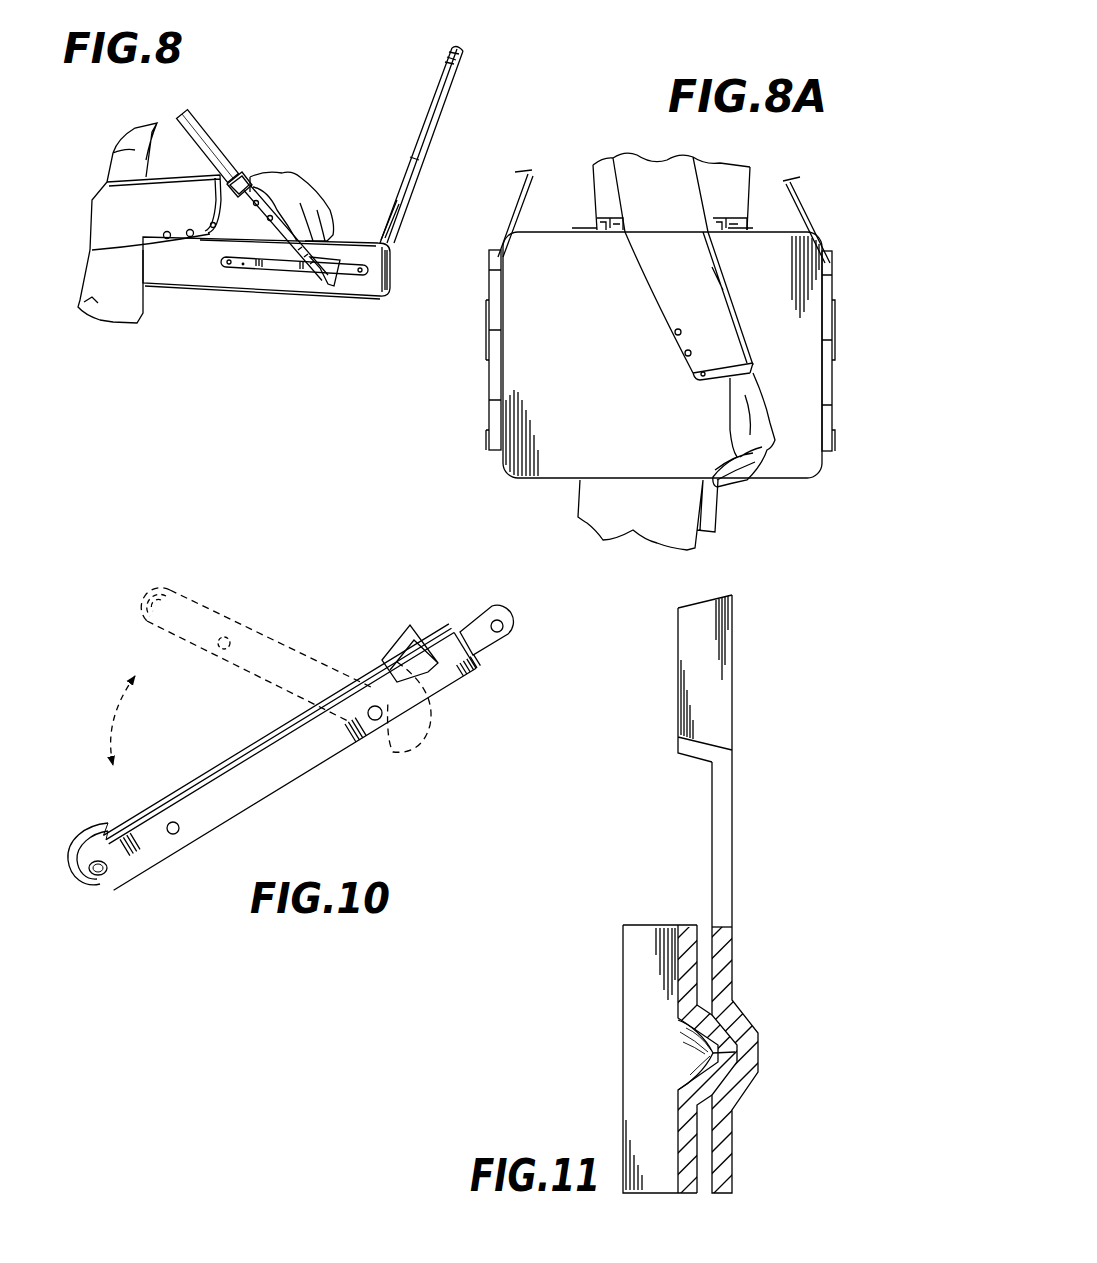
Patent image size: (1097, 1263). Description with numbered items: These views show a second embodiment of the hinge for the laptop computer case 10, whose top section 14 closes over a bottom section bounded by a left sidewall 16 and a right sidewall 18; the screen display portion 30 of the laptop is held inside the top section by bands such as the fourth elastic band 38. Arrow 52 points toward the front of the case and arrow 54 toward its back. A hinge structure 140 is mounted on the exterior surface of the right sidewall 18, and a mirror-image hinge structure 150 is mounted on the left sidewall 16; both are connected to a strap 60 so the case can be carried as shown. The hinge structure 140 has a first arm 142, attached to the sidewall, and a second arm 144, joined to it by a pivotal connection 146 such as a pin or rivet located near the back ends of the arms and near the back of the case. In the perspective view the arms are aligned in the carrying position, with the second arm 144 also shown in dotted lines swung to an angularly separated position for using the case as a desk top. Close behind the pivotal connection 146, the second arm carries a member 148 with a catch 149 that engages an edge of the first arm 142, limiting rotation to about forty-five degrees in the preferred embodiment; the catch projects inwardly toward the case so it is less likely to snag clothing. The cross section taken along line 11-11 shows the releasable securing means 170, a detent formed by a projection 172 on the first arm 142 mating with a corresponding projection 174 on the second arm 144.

In FIG. 8, the laptop computer case 10 is at (394, 254).
In FIG. 8A, the laptop computer case 10 is at (777, 484).
In FIG. 8, the top section 14 is at (441, 117).
In FIG. 8A, the top section 14 is at (515, 213).
In FIG. 8A, the left sidewall 16 is at (820, 460).
In FIG. 8, the right sidewall 18 is at (193, 285).
In FIG. 8, the display portion 30 is at (410, 157).
In FIG. 8, the fourth elastic band 38 is at (438, 64).
In FIG. 8, the arrow 52 is at (187, 358).
In FIG. 8, the arrow 54 is at (385, 360).
In FIG. 8, the strap 60 is at (205, 119).
In FIG. 8A, the strap 60 is at (803, 197).
In FIG. 8, the hinge structure 140 is at (290, 276).
In FIG. 8A, the hinge structure 140 is at (489, 355).
In FIG. 10, the hinge structure 140 is at (294, 778).
In FIG. 10, the first arm 142 is at (110, 822).
In FIG. 10, the second arm 144 is at (302, 620).
In FIG. 10, the pivotal connection 146 is at (383, 715).
In FIG. 10, the member 148 is at (430, 627).
In FIG. 11, the member 148 is at (734, 827).
In FIG. 10, the catch 149 is at (398, 628).
In FIG. 11, the catch 149 is at (692, 753).
In FIG. 8A, the hinge structure 150 is at (830, 356).
In FIG. 10, the releasable securing means 170 is at (180, 828).
In FIG. 11, the releasable securing means 170 is at (749, 1012).
In FIG. 11, the projection 172 is at (716, 1090).
In FIG. 11, the projection 174 is at (760, 1077).
In FIG. 10, the section line 11- 11 is at (205, 756).